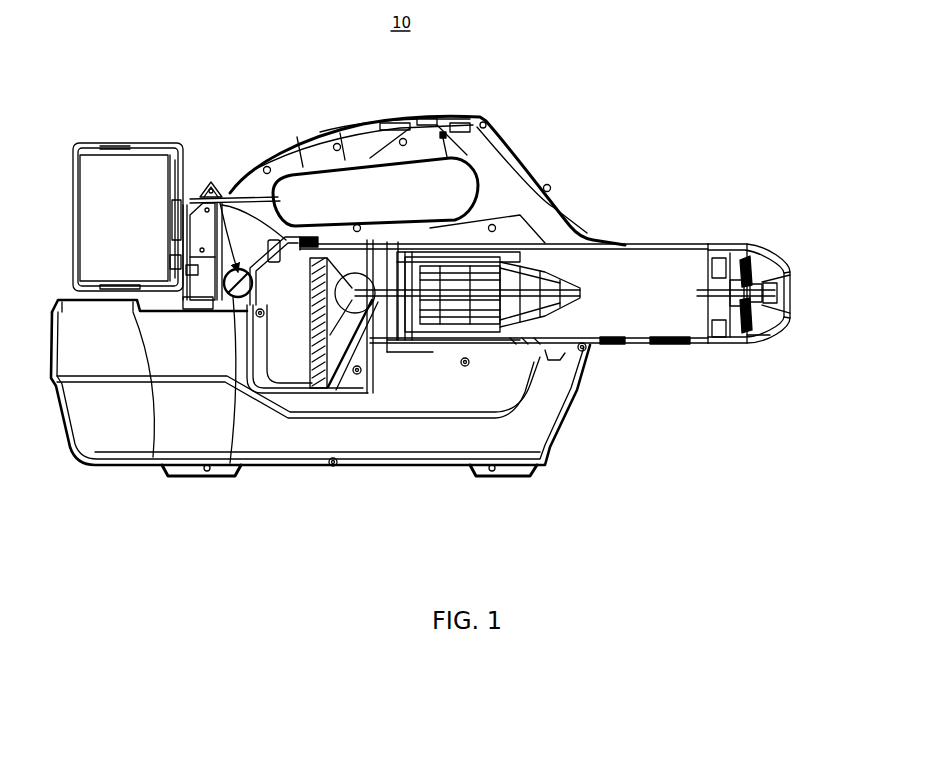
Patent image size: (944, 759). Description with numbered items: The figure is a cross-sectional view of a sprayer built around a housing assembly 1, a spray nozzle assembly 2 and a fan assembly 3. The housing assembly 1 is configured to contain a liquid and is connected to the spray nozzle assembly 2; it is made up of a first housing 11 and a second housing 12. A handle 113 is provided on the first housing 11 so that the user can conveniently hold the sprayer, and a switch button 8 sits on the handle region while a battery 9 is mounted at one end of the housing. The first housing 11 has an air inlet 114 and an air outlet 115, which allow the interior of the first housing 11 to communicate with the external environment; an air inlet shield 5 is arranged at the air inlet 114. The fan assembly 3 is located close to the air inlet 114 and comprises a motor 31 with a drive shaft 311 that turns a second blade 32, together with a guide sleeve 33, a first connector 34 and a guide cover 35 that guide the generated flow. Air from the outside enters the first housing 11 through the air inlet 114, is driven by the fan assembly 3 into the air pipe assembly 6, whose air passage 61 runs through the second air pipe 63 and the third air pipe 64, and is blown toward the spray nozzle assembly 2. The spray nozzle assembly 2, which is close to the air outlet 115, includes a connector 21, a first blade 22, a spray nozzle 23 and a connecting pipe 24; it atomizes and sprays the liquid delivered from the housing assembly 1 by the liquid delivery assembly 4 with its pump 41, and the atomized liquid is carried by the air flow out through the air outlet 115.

The housing assembly 1 is at (516, 216).
The first housing 11 is at (262, 224).
The handle 113 is at (363, 137).
The air inlet 114 is at (340, 293).
The air outlet 115 is at (773, 263).
The second housing 12 is at (140, 440).
The spray nozzle assembly 2 is at (753, 268).
The connector 21 is at (723, 337).
The first blade 22 is at (743, 330).
The spray nozzle 23 is at (788, 293).
The connecting pipe 24 is at (710, 287).
The fan assembly 3 is at (427, 317).
The motor 31 is at (457, 273).
The drive shaft 311 is at (447, 313).
The second blade 32 is at (377, 237).
The guide sleeve 33 is at (560, 290).
The first connector 34 is at (373, 307).
The guide cover 35 is at (345, 320).
The liquid delivery assembly 4 is at (211, 180).
The pump 41 is at (233, 467).
The air inlet shield 5 is at (310, 342).
The air pipe assembly 6 is at (645, 264).
The air passage 61 is at (663, 320).
The second air pipe 63 is at (417, 253).
The third air pipe 64 is at (620, 320).
The switch button 8 is at (425, 122).
The battery 9 is at (125, 172).